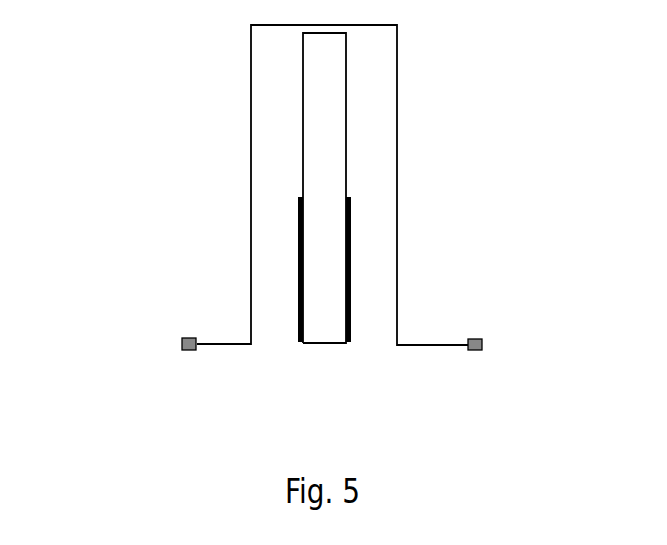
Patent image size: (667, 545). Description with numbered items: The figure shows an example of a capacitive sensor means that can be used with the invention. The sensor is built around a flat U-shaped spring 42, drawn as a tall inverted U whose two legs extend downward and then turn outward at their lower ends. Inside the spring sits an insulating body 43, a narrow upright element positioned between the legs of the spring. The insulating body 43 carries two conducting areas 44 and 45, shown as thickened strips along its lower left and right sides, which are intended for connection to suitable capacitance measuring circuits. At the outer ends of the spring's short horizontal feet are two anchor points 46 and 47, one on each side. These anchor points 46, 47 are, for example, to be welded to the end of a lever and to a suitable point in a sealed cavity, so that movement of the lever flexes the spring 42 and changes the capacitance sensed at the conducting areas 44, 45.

The flat U-shaped spring 42 is at (408, 179).
The insulating body 43 is at (290, 234).
The conducting area 44 is at (219, 319).
The conducting area 45 is at (411, 315).
The anchor point 46 is at (106, 388).
The anchor point 47 is at (540, 386).